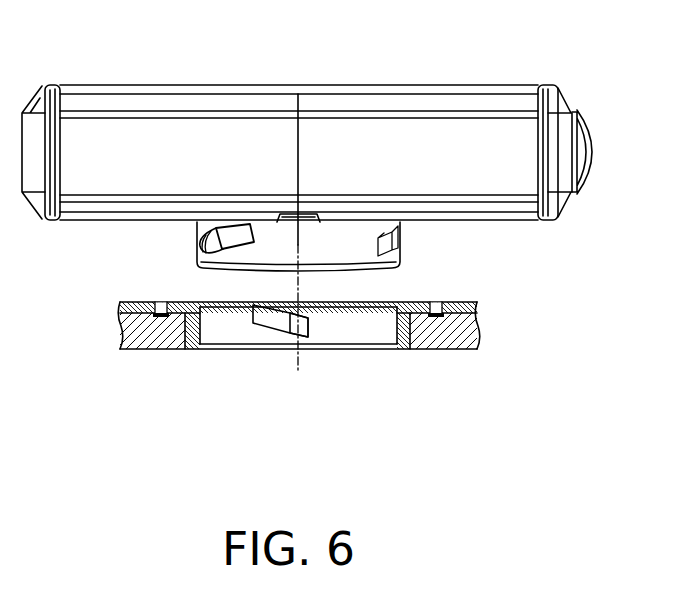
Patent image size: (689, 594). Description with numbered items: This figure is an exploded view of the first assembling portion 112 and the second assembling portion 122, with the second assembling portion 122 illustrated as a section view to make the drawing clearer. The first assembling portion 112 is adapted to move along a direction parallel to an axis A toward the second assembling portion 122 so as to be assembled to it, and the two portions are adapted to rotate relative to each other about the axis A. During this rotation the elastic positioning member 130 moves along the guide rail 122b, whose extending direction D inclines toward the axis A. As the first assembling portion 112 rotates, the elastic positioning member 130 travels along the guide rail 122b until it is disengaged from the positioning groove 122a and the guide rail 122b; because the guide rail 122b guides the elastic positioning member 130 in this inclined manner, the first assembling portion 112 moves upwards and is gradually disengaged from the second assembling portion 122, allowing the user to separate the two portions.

The first assembling portion 112 is at (357, 242).
The elastic positioning member 130 is at (230, 237).
The second assembling portion 122 is at (416, 303).
The positioning groove 122a is at (306, 312).
The guide rail 122b is at (283, 340).
The extending direction D is at (251, 334).
The axis A is at (300, 358).